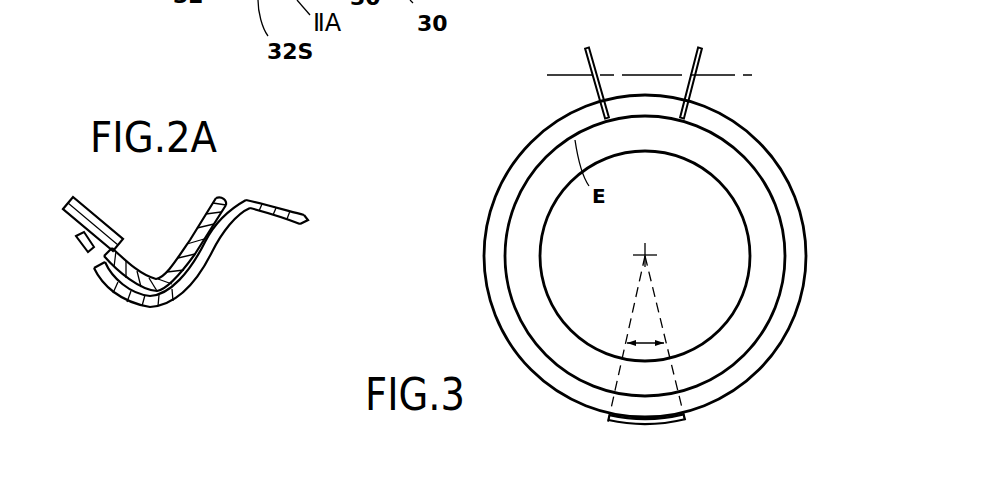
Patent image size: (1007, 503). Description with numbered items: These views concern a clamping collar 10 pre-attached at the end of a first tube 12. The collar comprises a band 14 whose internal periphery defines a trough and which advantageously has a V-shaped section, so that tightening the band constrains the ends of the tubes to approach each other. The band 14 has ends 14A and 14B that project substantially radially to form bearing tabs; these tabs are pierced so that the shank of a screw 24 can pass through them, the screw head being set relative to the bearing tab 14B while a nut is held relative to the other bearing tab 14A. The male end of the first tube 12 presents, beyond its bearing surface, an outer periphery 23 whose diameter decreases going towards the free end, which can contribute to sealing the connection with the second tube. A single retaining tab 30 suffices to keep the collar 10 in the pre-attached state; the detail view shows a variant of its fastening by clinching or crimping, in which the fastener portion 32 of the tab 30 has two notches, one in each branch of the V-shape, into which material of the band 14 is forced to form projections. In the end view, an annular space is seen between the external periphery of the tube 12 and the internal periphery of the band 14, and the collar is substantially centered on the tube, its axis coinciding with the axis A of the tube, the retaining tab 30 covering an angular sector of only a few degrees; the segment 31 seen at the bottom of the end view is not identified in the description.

In FIG. 3, the clamping collar 10 is at (738, 104).
In FIG. 3, the first tube 12 is at (735, 312).
In FIG. 2A, the band 14 is at (68, 203).
In FIG. 3, the band 14 is at (795, 185).
In FIG. 3, the bearing tab 14A is at (586, 60).
In FIG. 3, the bearing tab 14B is at (700, 60).
In FIG. 3, the outer periphery 23 is at (537, 297).
In FIG. 3, the screw 24 is at (637, 60).
In FIG. 2A, the retaining tab 30 is at (282, 245).
In FIG. 3, the retaining tab 30 is at (745, 409).
In FIG. 3, the spring segment 31 is at (625, 428).
In FIG. 2A, the fastener portion 32 is at (152, 309).
In FIG. 3, the axis A is at (646, 250).